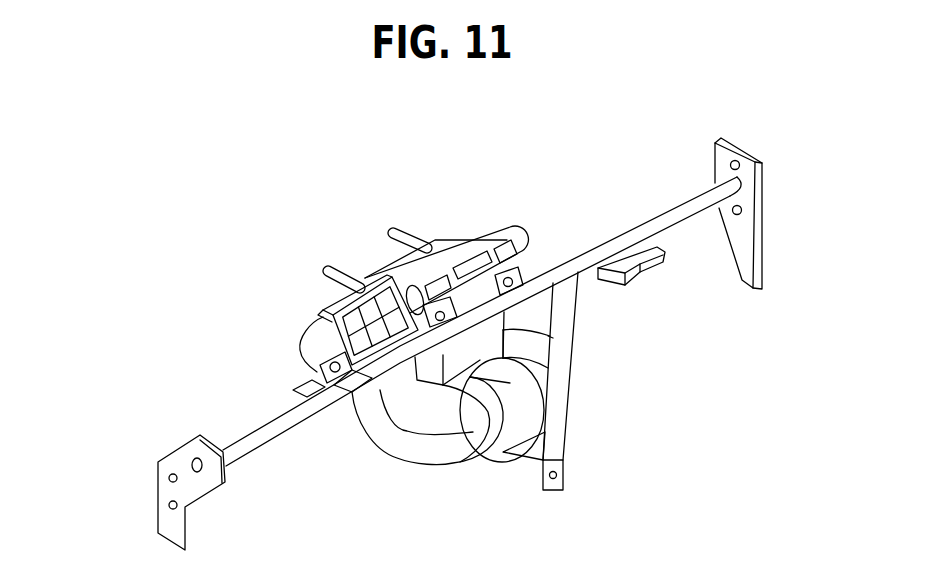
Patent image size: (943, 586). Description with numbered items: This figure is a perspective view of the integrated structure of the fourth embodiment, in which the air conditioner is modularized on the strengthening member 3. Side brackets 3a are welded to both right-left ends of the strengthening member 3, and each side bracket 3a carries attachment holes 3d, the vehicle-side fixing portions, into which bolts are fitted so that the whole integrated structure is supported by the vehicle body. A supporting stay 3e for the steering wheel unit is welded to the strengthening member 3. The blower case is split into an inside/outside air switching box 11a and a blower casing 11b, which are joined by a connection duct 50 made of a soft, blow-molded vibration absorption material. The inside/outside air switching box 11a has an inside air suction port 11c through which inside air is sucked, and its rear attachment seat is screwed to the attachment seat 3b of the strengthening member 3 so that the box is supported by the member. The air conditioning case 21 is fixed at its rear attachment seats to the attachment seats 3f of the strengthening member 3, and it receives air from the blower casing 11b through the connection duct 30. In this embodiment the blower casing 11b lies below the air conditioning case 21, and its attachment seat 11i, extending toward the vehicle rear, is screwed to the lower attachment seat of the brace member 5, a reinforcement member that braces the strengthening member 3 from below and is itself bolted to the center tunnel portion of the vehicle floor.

The strengthening member 3 is at (662, 213).
The side bracket 3a is at (167, 527).
The attachment seat 3b is at (325, 326).
The attachment hole 3d is at (170, 472).
The supporting stay 3e is at (632, 285).
The attachment seat 3f is at (435, 262).
The brace member 5 is at (577, 423).
The inside/outside air switching box 11a is at (300, 350).
The blower casing 11b is at (493, 462).
The inside air suction port 11c is at (376, 318).
The attachment seat 11i is at (552, 491).
The air conditioning case 21 is at (577, 350).
The connection duct 30 is at (577, 390).
The connection duct 50 is at (415, 466).